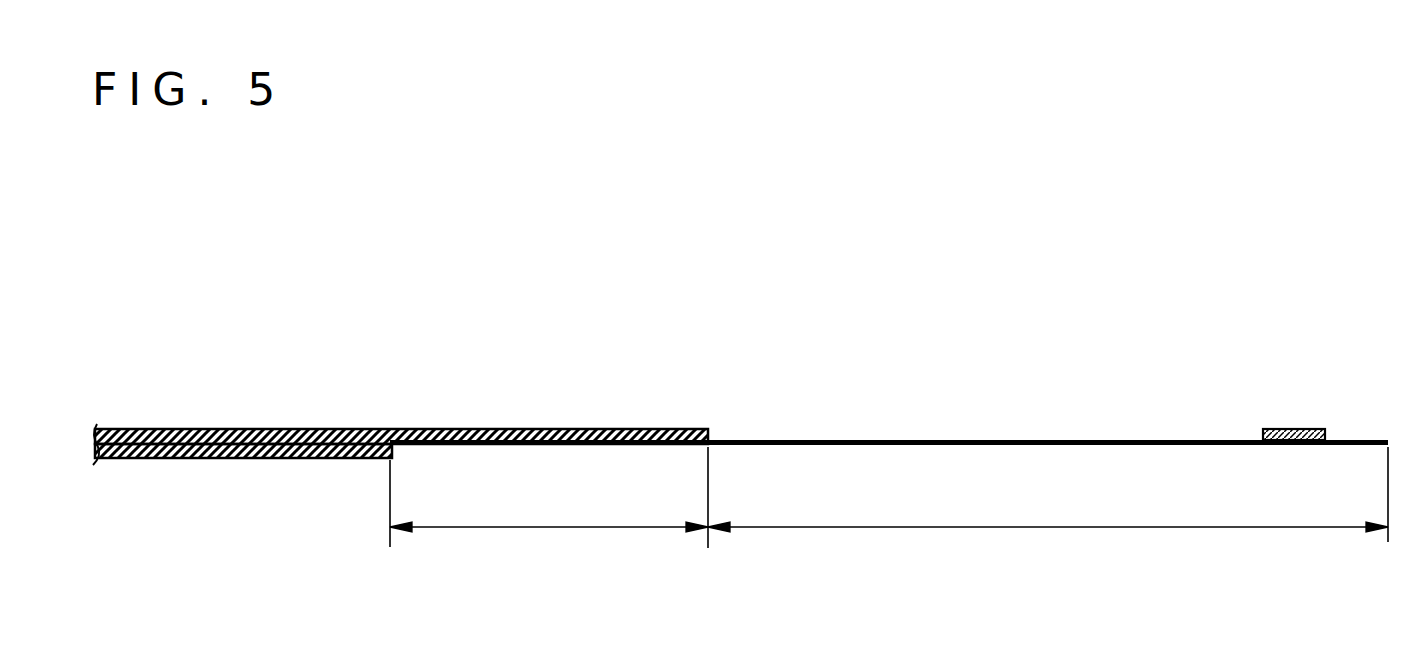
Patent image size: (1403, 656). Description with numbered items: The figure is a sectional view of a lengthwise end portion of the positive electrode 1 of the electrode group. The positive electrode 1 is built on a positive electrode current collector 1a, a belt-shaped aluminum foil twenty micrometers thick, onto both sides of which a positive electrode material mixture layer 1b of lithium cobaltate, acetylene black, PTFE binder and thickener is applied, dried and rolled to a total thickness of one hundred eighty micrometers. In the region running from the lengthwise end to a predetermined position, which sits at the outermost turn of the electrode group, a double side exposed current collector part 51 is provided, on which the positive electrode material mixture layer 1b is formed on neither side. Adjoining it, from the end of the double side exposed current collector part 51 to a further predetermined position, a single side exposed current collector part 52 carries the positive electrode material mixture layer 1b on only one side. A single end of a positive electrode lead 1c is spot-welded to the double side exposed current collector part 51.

The positive electrode 1 is at (580, 382).
The positive electrode current collector 1a is at (982, 440).
The positive electrode material mixture layer 1b is at (398, 430).
The positive electrode lead 1c is at (1293, 430).
The double side exposed current collector part 51 is at (1065, 528).
The single side exposed current collector part 52 is at (550, 527).